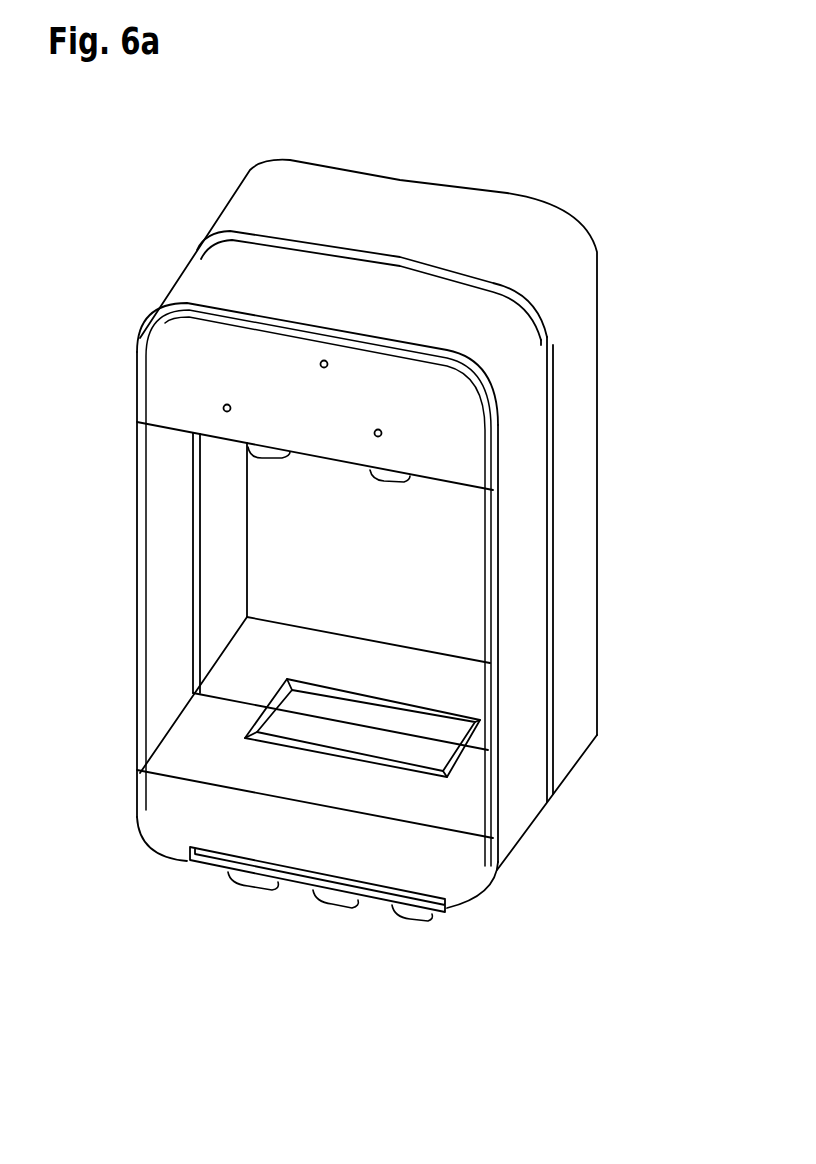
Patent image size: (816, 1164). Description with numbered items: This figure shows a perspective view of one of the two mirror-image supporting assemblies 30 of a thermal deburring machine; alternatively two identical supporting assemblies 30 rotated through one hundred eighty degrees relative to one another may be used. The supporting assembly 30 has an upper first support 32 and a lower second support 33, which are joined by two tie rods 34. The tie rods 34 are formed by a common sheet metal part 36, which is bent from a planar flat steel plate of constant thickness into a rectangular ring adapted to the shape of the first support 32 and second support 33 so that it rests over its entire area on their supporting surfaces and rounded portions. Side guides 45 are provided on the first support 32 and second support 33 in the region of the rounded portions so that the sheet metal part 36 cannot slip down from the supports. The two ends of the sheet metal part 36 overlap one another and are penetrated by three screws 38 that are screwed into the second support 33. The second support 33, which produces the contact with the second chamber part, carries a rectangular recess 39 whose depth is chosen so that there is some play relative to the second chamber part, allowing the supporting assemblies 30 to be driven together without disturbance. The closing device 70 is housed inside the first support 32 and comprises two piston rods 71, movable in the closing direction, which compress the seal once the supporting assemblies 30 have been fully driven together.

The supporting assembly 30 is at (257, 208).
The first support 32 is at (157, 392).
The second support 33 is at (163, 818).
The tie rod 34 is at (143, 597).
The sheet metal part 36 is at (580, 409).
The screw 38 is at (248, 888).
The recess 39 is at (385, 747).
The side guide 45 is at (140, 342).
The closing device 70 is at (331, 507).
The piston rod 71 is at (268, 460).